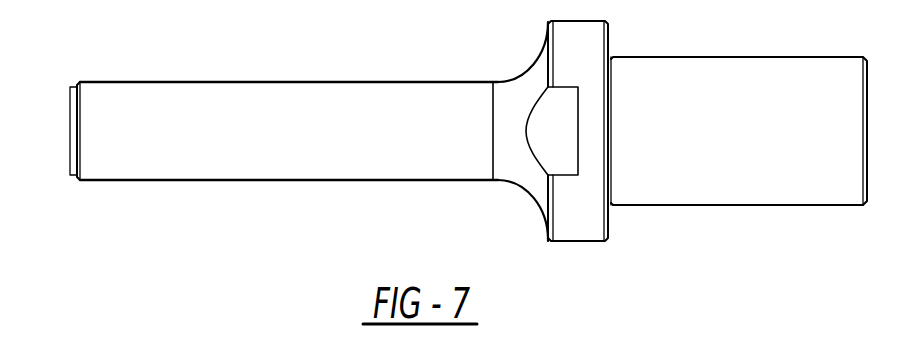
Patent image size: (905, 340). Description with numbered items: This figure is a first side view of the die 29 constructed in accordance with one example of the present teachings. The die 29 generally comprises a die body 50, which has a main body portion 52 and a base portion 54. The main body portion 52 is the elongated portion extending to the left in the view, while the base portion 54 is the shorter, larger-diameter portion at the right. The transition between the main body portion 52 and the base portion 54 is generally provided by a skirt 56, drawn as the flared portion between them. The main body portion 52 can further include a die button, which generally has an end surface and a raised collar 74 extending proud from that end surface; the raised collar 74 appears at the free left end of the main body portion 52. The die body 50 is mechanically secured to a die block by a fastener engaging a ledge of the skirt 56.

The die 29 is at (415, 100).
The die body 50 is at (218, 95).
The main body portion 52 is at (343, 162).
The base portion 54 is at (725, 183).
The skirt 56 is at (578, 225).
The raised collar 74 is at (70, 97).